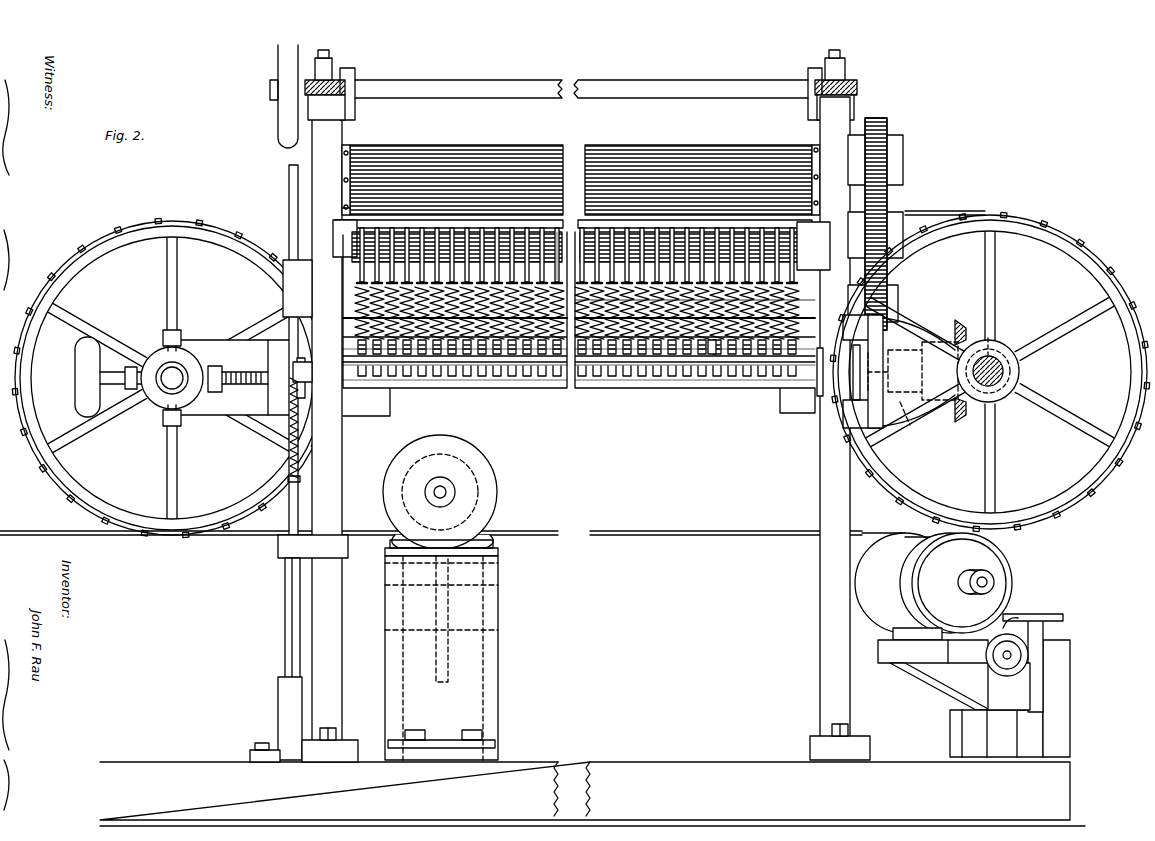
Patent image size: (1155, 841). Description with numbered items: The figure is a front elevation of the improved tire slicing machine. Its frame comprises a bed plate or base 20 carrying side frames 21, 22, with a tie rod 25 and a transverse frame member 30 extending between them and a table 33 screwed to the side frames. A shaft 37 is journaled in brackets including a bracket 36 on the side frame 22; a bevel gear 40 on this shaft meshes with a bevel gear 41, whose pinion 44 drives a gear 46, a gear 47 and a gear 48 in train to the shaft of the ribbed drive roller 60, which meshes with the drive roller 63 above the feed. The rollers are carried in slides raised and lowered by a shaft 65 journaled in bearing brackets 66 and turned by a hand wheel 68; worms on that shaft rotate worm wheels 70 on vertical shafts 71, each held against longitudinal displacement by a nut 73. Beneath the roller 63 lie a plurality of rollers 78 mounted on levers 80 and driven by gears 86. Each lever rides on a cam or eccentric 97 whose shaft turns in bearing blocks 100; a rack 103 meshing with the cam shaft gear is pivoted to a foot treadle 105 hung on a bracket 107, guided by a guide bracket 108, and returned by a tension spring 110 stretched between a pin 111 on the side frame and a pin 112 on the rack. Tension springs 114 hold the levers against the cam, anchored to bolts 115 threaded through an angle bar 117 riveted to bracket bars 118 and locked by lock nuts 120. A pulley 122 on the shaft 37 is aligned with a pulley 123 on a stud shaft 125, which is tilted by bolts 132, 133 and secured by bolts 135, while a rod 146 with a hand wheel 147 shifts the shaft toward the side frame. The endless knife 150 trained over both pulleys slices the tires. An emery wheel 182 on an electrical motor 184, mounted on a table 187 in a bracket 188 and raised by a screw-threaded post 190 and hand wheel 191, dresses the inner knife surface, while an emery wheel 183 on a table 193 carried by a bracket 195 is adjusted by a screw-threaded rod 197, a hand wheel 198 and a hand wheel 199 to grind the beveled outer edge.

The bed plate or base 20 is at (760, 762).
The side frame 21 is at (342, 135).
The side frame 22 is at (826, 132).
The tie rod 25 is at (508, 388).
The transverse frame member 30 is at (805, 290).
The table 33 is at (340, 228).
The bracket 36 is at (1015, 358).
The shaft 37 is at (998, 372).
The bevel gear 40 is at (988, 338).
The bevel gear 41 is at (954, 330).
The pinion 44 is at (900, 379).
The gear 46 is at (890, 310).
The gear 47 is at (888, 215).
The gear 48 is at (880, 120).
The ribbed drive roller 60 is at (658, 150).
The drive roller 63 is at (437, 193).
The shaft 65 is at (440, 80).
The bearing bracket 66 is at (335, 108).
The hand wheel 68 is at (278, 130).
The worm wheel 70 is at (348, 82).
The vertically disposed shaft 71 is at (325, 56).
The nut 73 is at (332, 66).
The roller 78 is at (344, 206).
The lever 80 is at (362, 286).
The gear 86 is at (362, 243).
The cam or eccentric 97 is at (712, 360).
The bearing block 100 is at (595, 253).
The rack 103 is at (289, 170).
The foot treadle 105 is at (285, 615).
The bracket 107 is at (280, 718).
The guide bracket 108 is at (283, 300).
The tension spring 110 is at (290, 440).
The pin 111 is at (293, 370).
The pin 112 is at (290, 478).
The tension spring 114 is at (345, 318).
The bolt 115 is at (417, 371).
The angle bar 117 is at (823, 356).
The bracket bar 118 is at (533, 370).
The lock nut 120 is at (454, 366).
The pulley 122 is at (1025, 222).
The pulley 123 is at (170, 222).
The stud shaft 125 is at (168, 380).
The bolt 132 is at (128, 367).
The bolt 133 is at (216, 366).
The bolt 135 is at (172, 330).
The rod 146 is at (238, 384).
The hand wheel 147 is at (76, 350).
The knife 150 is at (672, 531).
The emery wheel 182 is at (478, 456).
The emery wheel 183 is at (868, 532).
The electrical motor 184 is at (495, 485).
The table 187 is at (500, 552).
The bracket 188 is at (498, 594).
The screw-threaded post 190 is at (447, 665).
The hand wheel 191 is at (480, 510).
The table 193 is at (906, 663).
The bracket 195 is at (1060, 646).
The screw-threaded rod 197 is at (1008, 676).
The hand wheel 198 is at (1010, 626).
The hand wheel 199 is at (1045, 614).